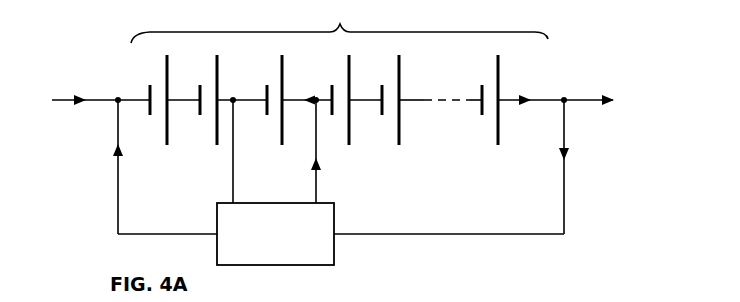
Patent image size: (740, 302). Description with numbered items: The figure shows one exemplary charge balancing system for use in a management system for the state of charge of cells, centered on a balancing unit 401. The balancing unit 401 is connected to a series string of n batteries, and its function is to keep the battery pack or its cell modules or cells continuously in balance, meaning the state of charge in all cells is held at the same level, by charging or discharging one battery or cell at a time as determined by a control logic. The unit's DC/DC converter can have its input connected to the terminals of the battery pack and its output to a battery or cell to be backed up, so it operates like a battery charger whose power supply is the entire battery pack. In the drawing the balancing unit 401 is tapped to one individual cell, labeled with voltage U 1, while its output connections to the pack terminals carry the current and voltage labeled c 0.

The balancing unit 401 is at (627, 31).
The battery cell U1 1 is at (264, 99).
The balancing unit 0 is at (294, 236).